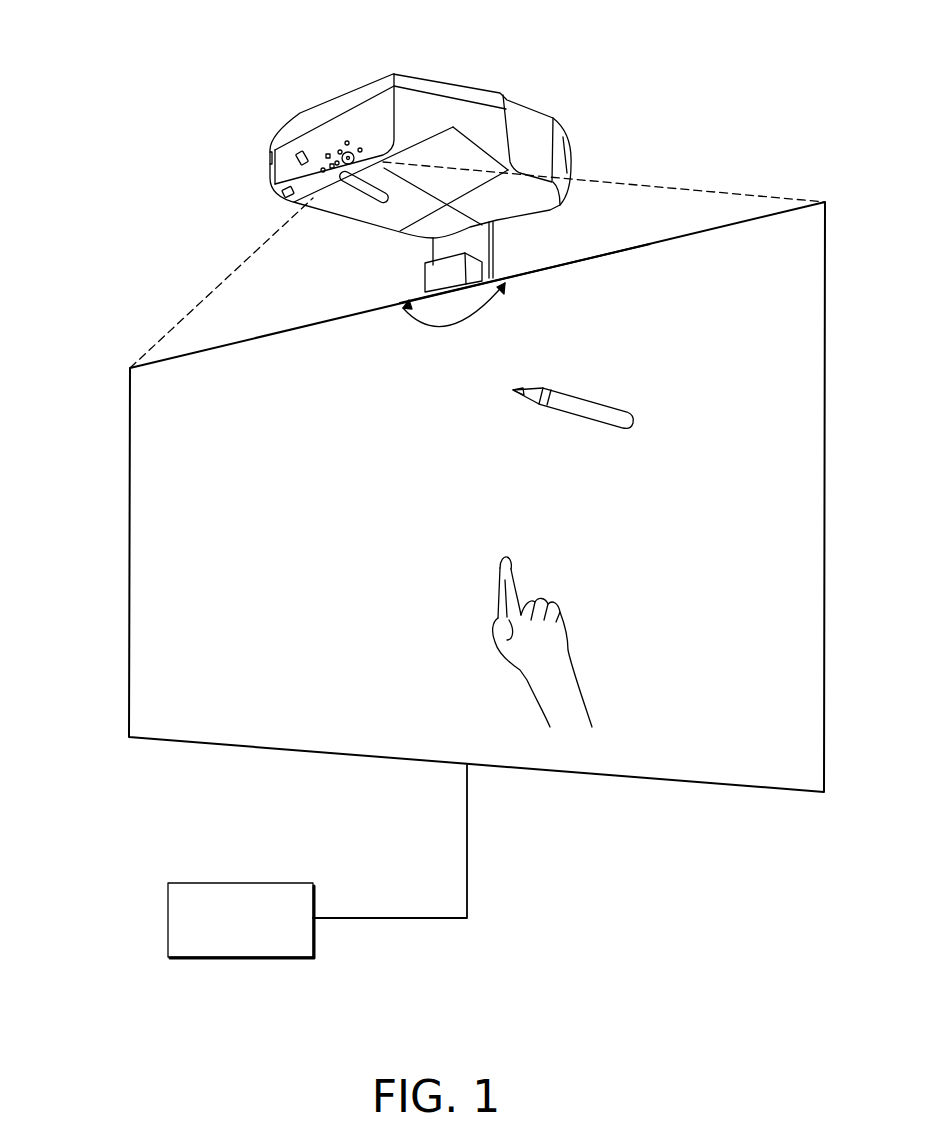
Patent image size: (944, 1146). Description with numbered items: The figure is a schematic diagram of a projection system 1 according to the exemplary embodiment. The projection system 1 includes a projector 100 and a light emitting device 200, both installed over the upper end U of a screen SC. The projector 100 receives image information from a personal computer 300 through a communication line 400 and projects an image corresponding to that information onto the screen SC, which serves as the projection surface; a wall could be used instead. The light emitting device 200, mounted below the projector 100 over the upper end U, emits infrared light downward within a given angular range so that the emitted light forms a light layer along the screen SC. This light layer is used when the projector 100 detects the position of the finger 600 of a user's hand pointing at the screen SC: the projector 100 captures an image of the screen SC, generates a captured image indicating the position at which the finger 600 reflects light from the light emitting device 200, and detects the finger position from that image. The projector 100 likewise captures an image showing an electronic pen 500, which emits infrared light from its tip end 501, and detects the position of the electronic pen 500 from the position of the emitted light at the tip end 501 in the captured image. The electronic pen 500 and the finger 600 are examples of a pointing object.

The projection system 1 is at (182, 108).
The projector 100 is at (460, 82).
The light emitting device 200 is at (407, 280).
The personal computer 300 is at (263, 881).
The communication line 400 is at (467, 900).
The electronic pen 500 is at (583, 398).
The tip end 501 is at (517, 384).
The finger 600 is at (500, 568).
The screen SC is at (128, 522).
The upper end U is at (545, 262).